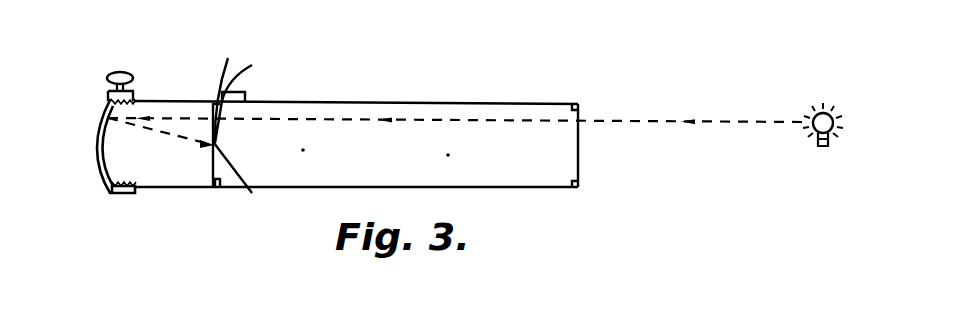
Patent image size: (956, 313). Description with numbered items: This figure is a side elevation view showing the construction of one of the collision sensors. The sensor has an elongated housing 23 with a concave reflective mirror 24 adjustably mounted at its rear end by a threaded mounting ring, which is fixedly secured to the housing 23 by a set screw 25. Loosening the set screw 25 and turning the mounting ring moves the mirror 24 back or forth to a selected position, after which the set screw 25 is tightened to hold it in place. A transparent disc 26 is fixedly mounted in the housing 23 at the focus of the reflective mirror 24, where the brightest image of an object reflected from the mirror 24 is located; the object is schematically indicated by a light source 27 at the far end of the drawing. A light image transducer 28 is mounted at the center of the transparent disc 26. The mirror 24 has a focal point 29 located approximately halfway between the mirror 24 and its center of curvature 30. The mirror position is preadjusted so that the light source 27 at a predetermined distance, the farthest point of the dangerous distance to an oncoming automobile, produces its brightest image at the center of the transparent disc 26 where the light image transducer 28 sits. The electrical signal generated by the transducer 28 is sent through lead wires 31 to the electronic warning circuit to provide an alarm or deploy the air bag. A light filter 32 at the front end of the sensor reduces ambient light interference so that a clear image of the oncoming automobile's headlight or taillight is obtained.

The elongated housing 23 is at (500, 103).
The concave reflective mirror 24 is at (95, 128).
The set screw 25 is at (130, 80).
The transparent disc 26 is at (210, 172).
The light source 27 is at (817, 117).
The light image transducer 28 is at (247, 185).
The focal point 29 is at (303, 150).
The center of curvature 30 is at (448, 155).
The lead wires 31 is at (231, 63).
The light filter 32 is at (580, 168).